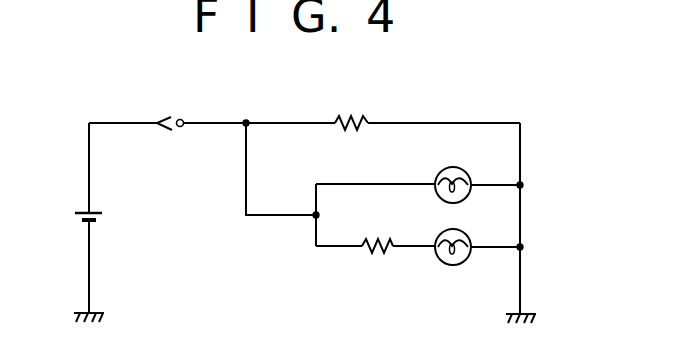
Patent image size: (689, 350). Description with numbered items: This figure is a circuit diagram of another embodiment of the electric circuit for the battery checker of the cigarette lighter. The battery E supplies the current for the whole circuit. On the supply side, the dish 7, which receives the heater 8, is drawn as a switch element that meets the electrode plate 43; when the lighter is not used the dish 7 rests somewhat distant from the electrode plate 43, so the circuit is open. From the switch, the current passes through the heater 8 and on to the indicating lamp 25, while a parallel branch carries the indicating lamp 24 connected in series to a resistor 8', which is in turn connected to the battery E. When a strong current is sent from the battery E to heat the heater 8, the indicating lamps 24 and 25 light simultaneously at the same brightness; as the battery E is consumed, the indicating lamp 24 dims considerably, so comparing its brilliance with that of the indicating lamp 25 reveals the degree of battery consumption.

The electrode plate 43 is at (168, 120).
The dish 7 is at (181, 119).
The heater 8 is at (351, 100).
The resistor 8' is at (377, 273).
The indicating lamp 25 is at (463, 168).
The indicating lamp 24 is at (466, 230).
The battery E is at (75, 216).